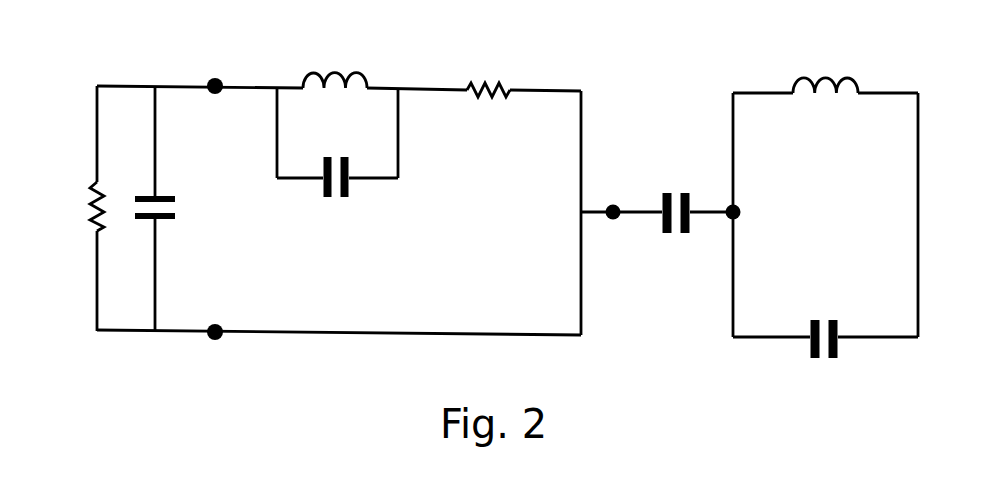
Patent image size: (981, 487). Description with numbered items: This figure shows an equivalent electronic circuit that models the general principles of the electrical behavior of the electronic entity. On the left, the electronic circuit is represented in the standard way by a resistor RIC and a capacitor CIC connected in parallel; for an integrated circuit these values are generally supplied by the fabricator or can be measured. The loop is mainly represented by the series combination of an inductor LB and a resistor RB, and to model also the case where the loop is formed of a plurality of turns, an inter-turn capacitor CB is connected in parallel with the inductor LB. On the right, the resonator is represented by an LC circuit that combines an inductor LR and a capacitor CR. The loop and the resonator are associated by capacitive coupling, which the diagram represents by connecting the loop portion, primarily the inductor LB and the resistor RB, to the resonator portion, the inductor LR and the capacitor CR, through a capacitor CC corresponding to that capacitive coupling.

The resistor RIC is at (72, 206).
The capacitor CIC is at (176, 208).
The inductor LB is at (335, 62).
The inter-turn capacitor CB is at (336, 161).
The resistor RB is at (488, 72).
The capacitor CC is at (676, 196).
The inductor LR is at (825, 69).
The capacitor CR is at (821, 323).